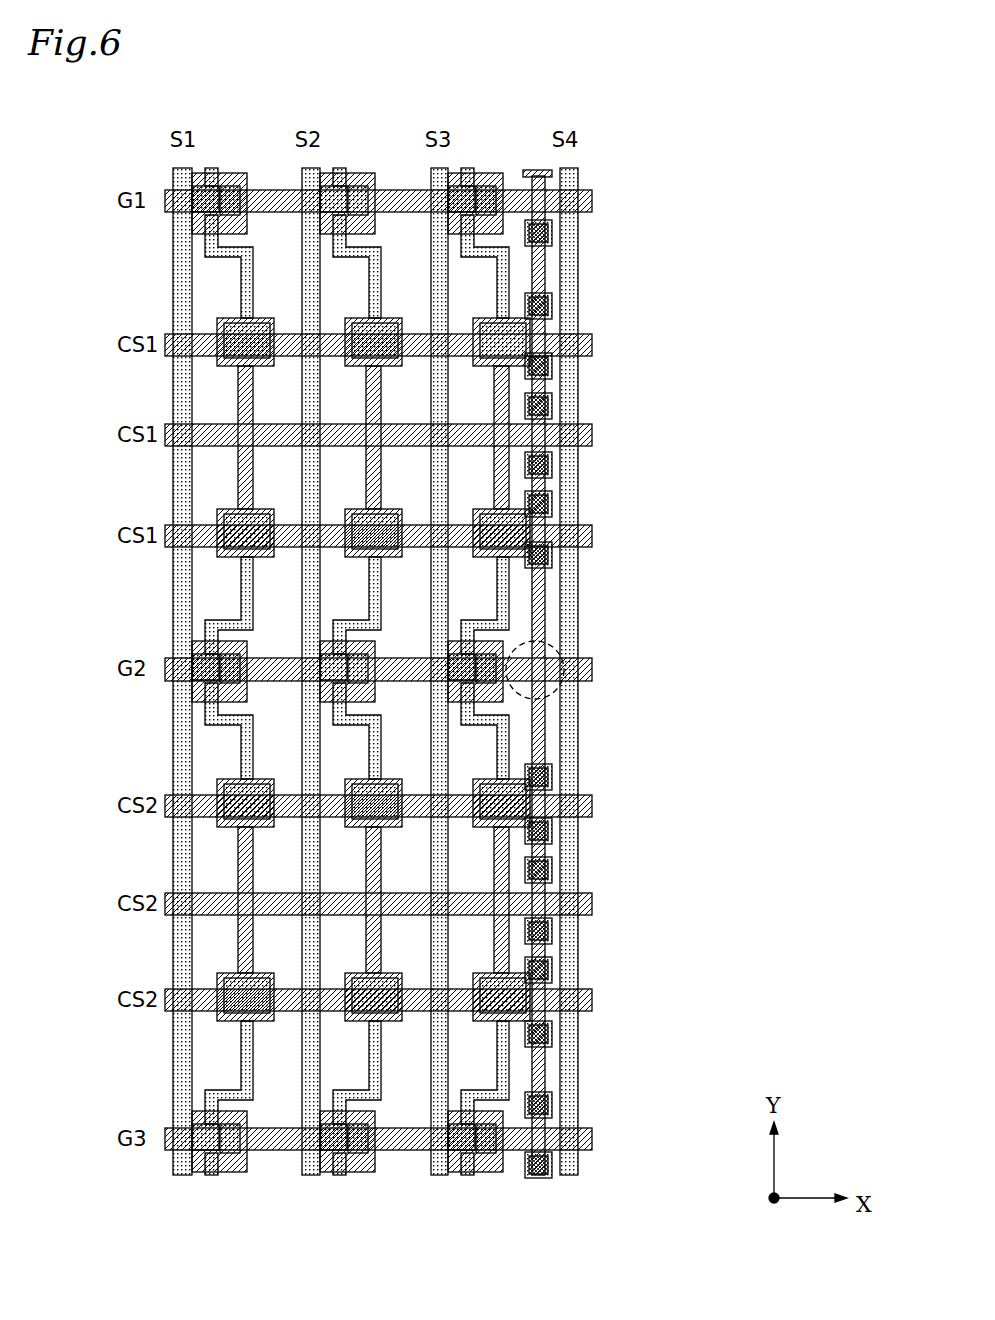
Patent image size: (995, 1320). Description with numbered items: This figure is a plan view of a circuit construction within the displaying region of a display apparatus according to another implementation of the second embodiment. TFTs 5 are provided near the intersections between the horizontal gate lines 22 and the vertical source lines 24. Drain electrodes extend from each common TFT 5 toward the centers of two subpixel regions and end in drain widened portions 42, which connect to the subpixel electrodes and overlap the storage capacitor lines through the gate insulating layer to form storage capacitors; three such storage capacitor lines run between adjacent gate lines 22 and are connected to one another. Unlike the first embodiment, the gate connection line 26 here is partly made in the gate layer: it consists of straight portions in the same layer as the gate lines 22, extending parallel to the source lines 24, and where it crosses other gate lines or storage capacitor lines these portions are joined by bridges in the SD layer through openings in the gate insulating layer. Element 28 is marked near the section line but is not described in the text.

The TFT 5 is at (508, 707).
The gate line 22 is at (412, 660).
The source line 24 is at (440, 392).
The gate connection line 26 is at (545, 606).
The storage capacitor electrode 28 is at (555, 698).
The drain widened portion 42 is at (402, 522).